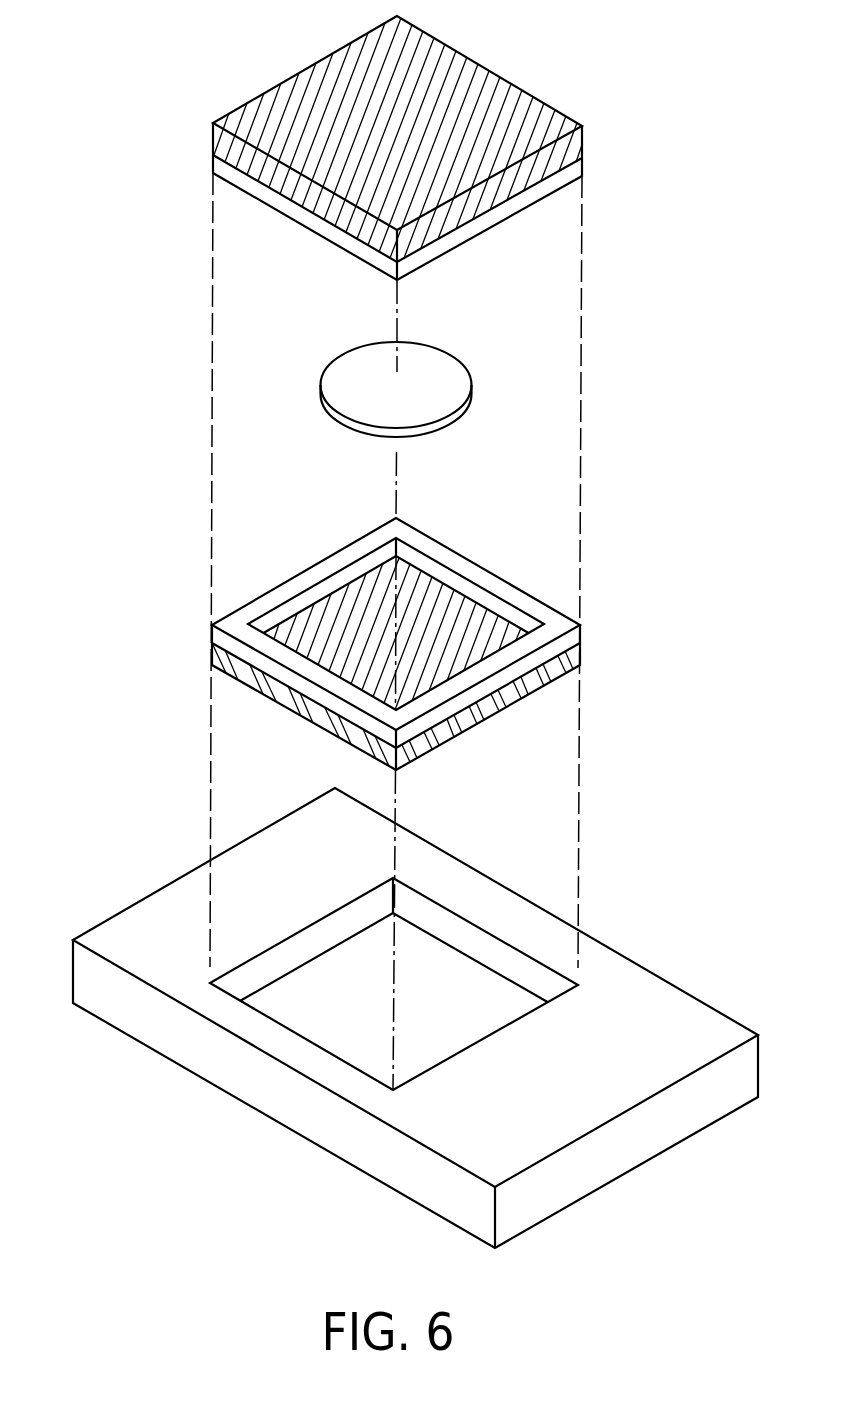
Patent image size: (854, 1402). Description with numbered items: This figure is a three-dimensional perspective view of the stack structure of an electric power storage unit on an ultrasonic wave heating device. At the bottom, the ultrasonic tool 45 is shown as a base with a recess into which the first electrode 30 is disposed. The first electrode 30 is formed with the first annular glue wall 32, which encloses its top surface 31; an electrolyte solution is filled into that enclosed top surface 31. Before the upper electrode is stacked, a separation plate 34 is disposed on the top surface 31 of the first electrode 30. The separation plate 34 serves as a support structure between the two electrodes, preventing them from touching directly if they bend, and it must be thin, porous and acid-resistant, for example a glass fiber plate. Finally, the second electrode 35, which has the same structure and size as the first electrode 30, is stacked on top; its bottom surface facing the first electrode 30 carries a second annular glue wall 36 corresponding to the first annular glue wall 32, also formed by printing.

The first electrode 30 is at (482, 713).
The top surface 31 is at (363, 600).
The first annular glue wall 32 is at (557, 628).
The separation plate 34 is at (432, 387).
The second electrode 35 is at (502, 76).
The second annular glue wall 36 is at (223, 172).
The ultrasonic tool 45 is at (628, 1003).